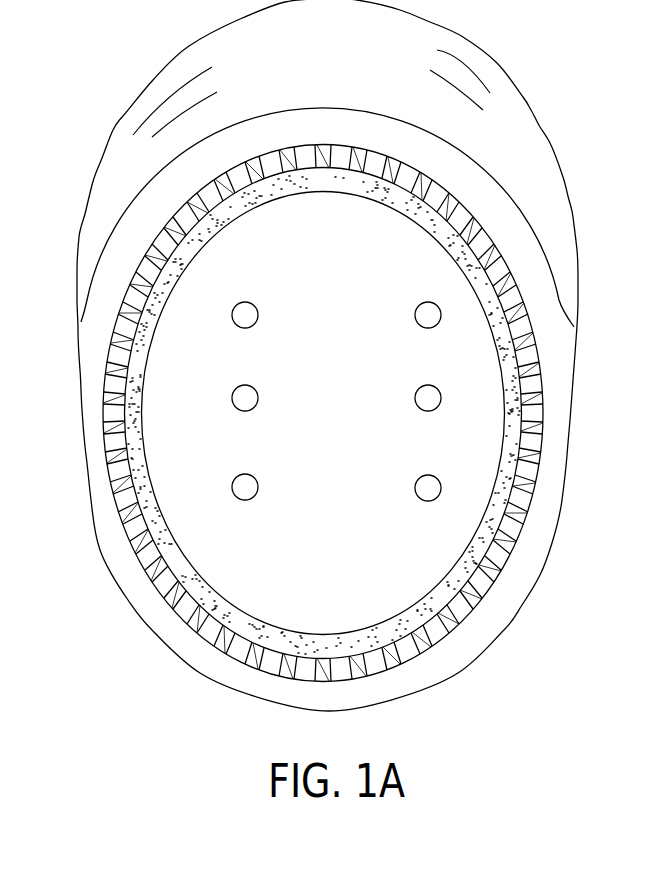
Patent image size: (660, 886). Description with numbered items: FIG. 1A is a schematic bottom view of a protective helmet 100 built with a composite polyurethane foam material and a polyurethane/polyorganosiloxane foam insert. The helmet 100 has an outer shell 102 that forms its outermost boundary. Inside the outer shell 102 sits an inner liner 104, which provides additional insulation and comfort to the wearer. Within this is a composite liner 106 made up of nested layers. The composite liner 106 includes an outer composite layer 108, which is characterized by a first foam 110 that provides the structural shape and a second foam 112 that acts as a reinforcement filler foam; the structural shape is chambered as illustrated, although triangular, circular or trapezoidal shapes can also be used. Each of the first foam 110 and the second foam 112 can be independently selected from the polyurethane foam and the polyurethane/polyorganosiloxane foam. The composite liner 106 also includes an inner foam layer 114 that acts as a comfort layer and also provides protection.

The helmet 100 is at (323, 356).
The outer shell 102 is at (563, 168).
The inner liner 104 is at (560, 350).
The composite liner 106 is at (428, 580).
The outer composite layer 108 is at (548, 398).
The first foam 110 is at (543, 428).
The second foam 112 is at (535, 470).
The inner foam layer 114 is at (500, 525).